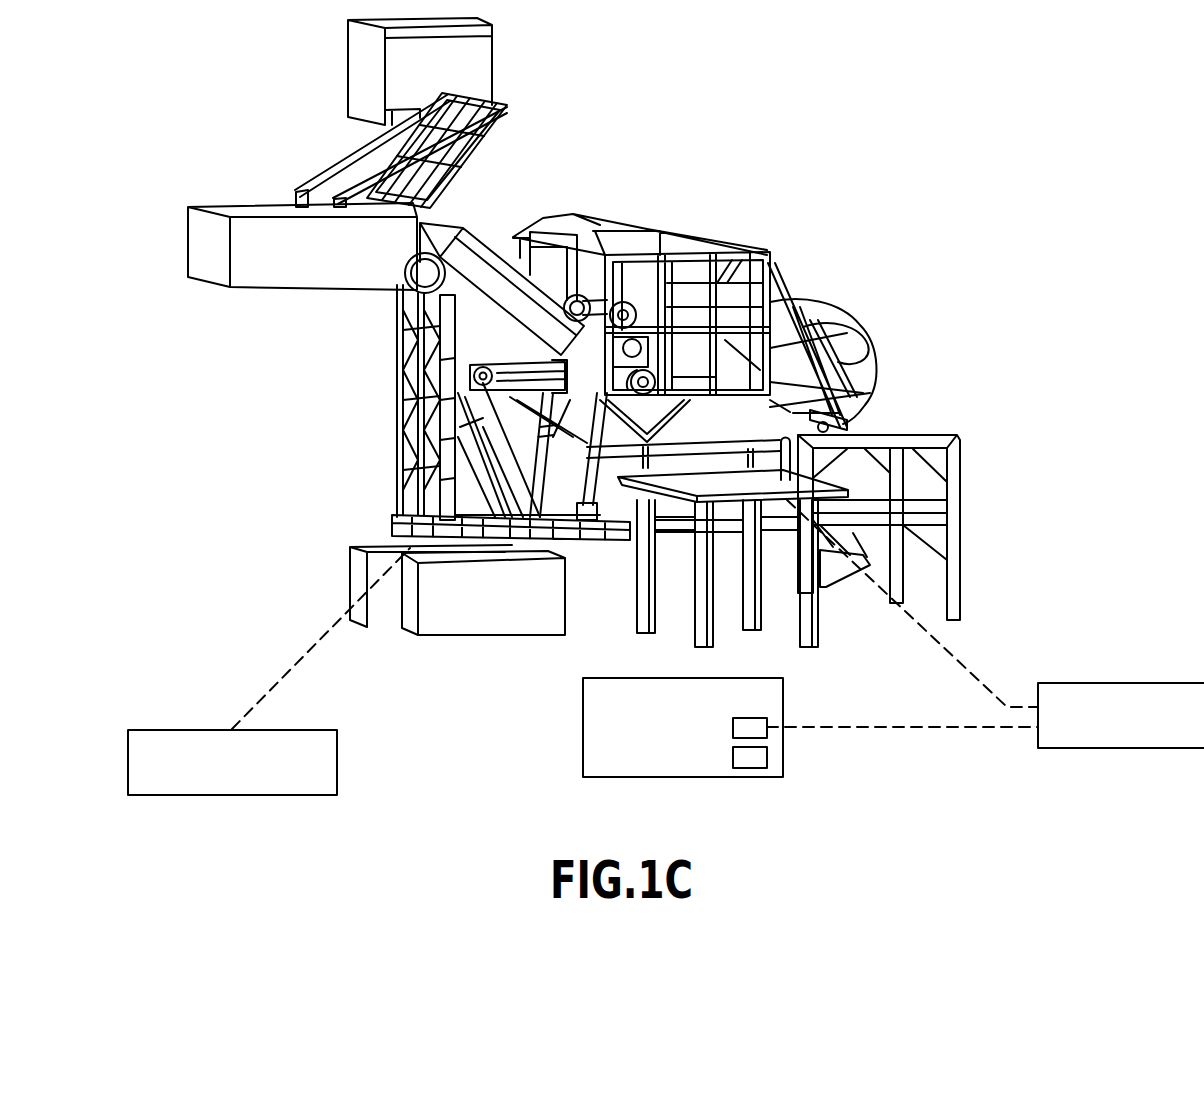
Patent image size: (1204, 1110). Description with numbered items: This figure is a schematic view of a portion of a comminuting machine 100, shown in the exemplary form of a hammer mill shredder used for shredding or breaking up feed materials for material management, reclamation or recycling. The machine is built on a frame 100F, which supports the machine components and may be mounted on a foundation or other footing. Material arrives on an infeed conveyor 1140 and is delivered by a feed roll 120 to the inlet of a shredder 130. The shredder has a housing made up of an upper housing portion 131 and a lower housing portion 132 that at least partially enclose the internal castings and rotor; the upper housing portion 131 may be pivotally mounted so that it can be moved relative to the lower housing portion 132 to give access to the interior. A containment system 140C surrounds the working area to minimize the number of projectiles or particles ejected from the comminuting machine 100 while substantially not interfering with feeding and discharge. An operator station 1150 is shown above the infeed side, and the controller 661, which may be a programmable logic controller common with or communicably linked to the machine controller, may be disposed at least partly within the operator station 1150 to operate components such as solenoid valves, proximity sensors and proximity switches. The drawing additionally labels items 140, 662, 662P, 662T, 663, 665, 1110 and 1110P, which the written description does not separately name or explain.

The comminuting machine 100 is at (1022, 78).
The frame 100F is at (410, 342).
The feed roll 120 is at (635, 308).
The shredder 130 is at (868, 292).
The upper housing portion 131 is at (862, 332).
The lower housing portion 132 is at (847, 396).
The cage 140 is at (725, 246).
The containment system 140C is at (770, 140).
The controller 661 is at (338, 762).
The hydraulic unit 662 is at (617, 778).
The hydraulic pump 662P is at (767, 730).
The hydraulic tank 662T is at (752, 770).
The manifold 663 is at (1115, 683).
The support frame 665 is at (785, 458).
The conveyor 1110 is at (492, 134).
The conveyor pivot 1110P is at (418, 108).
The infeed conveyor 1140 is at (250, 203).
The operator station 1150 is at (365, 48).